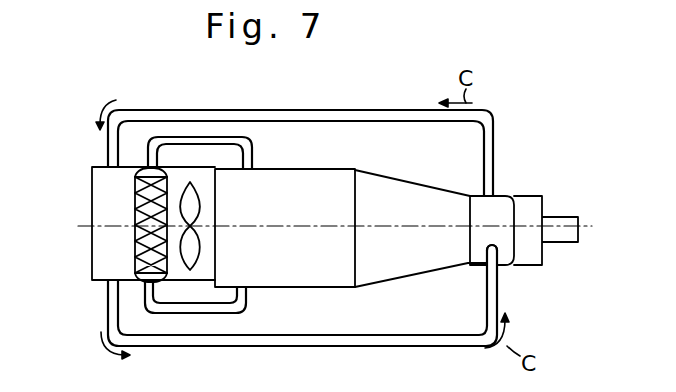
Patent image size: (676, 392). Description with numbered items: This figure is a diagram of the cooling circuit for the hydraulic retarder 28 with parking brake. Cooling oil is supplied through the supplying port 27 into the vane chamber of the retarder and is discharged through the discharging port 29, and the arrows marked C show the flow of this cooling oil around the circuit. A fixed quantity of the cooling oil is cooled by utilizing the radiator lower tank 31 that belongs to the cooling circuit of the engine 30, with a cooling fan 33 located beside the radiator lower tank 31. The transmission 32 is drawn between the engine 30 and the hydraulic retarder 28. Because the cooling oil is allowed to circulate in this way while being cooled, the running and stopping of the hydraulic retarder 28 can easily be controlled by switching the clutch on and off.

The supplying port 27 is at (492, 253).
The hydraulic retarder 28 is at (505, 203).
The discharging port 29 is at (490, 193).
The engine 30 is at (287, 288).
The radiator lower tank 31 is at (98, 248).
The transmission 32 is at (415, 269).
The cooling fan 33 is at (188, 266).